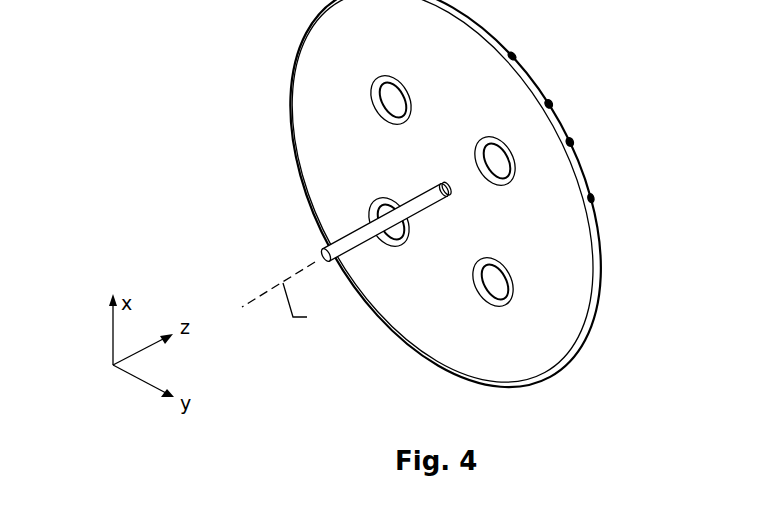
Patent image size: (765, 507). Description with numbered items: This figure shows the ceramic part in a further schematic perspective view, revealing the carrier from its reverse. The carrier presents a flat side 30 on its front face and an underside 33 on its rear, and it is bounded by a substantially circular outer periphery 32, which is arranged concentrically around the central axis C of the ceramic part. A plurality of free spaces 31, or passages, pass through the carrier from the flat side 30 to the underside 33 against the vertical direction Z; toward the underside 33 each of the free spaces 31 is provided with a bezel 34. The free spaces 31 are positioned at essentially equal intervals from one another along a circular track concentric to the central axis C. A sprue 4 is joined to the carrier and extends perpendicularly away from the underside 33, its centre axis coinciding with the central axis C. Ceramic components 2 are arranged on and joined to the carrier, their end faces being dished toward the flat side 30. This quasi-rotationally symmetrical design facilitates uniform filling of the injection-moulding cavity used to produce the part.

The ceramic components 2 is at (569, 127).
The sprue 4 is at (359, 222).
The flat side 30 is at (459, 220).
The free spaces 31 is at (380, 205).
The outer periphery 32 is at (459, 220).
The underside 33 is at (442, 216).
The bezel 34 is at (380, 197).